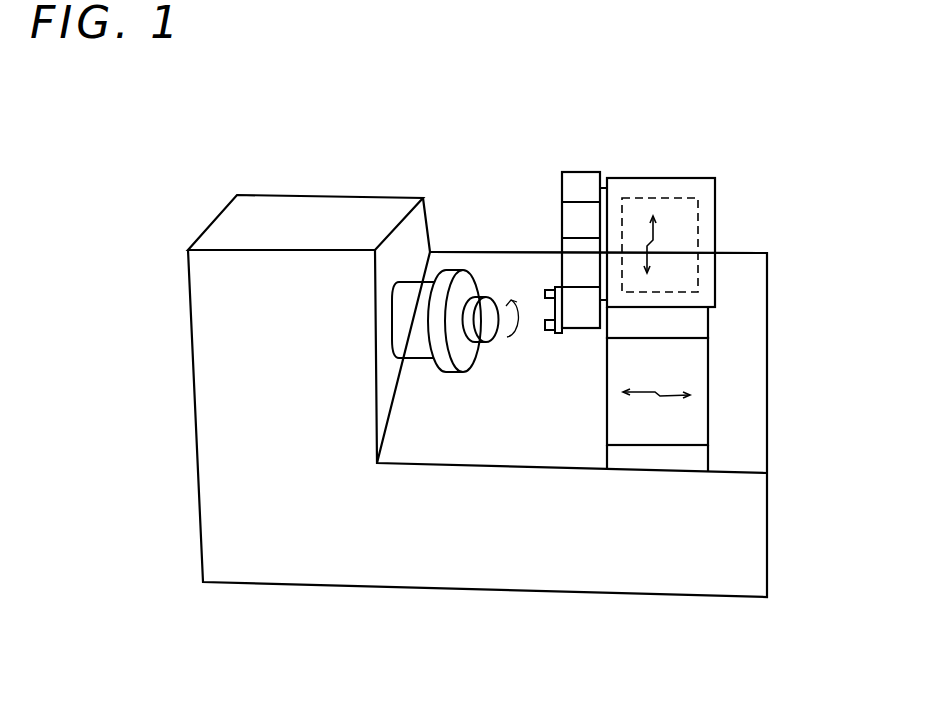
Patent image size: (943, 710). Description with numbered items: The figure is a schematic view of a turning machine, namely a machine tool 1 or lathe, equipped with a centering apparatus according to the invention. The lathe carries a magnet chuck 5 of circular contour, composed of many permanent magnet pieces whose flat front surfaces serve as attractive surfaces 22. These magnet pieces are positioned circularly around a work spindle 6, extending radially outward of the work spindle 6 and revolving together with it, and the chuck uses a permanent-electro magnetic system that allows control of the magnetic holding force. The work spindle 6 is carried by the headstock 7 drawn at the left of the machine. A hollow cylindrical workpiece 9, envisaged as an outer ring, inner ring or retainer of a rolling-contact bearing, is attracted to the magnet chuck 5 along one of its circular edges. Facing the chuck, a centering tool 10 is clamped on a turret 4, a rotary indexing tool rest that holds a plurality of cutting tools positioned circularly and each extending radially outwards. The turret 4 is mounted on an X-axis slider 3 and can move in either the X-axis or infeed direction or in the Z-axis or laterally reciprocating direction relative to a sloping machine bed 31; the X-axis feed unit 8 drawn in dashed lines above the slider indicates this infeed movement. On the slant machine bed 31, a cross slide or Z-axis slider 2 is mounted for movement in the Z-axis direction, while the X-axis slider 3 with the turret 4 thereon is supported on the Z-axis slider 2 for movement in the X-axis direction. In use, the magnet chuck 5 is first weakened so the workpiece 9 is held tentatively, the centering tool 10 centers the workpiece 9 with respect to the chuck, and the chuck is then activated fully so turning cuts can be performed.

The machine tool 1 is at (735, 240).
The Z-axis slider 2 is at (695, 365).
The X-axis slider 3 is at (698, 297).
The turret 4 is at (582, 188).
The magnet chuck 5 is at (447, 278).
The work spindle 6 is at (410, 307).
The headstock 7 is at (298, 283).
The X-axis feed mechanism 8 is at (670, 208).
The workpiece 9 is at (487, 313).
The centering tool 10 is at (546, 329).
The attractive surfaces 22 is at (458, 345).
The machine bed 31 is at (748, 430).